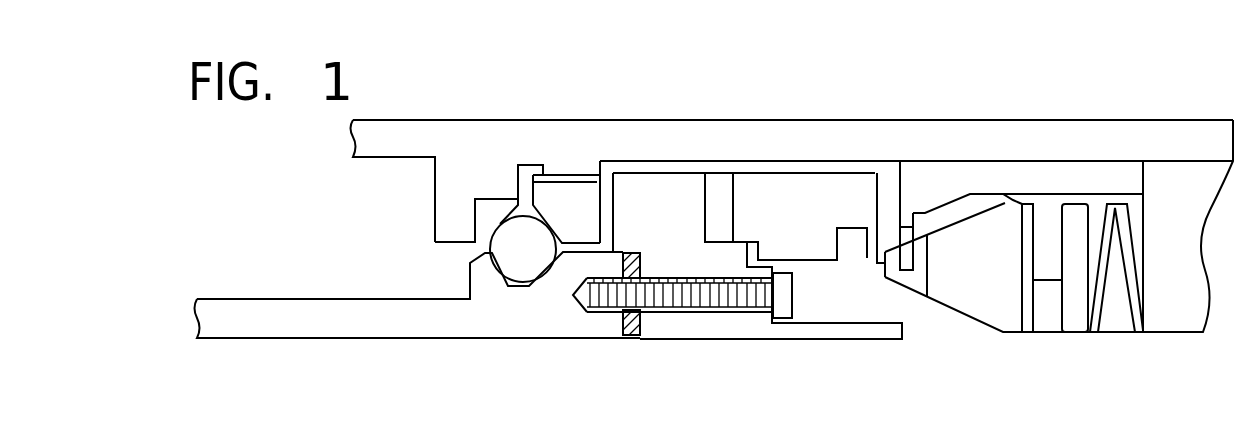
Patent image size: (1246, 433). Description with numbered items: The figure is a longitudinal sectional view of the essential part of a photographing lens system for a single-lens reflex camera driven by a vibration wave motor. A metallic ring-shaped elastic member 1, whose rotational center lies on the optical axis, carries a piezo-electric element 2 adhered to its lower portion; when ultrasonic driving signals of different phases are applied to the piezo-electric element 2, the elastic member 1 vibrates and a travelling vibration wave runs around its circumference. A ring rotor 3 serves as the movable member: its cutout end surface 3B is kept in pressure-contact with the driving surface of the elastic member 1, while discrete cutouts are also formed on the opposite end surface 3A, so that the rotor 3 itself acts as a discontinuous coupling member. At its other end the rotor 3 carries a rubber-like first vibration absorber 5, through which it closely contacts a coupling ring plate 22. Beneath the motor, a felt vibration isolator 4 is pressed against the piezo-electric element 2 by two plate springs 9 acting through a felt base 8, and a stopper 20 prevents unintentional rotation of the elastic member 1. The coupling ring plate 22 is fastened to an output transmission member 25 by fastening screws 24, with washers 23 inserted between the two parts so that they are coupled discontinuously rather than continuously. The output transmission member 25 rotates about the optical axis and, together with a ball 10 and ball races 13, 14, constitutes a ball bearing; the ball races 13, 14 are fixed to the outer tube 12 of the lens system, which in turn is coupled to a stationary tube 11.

The elastic member 1 is at (992, 218).
The piezo-electric element 2 is at (1033, 213).
The ring rotor 3 is at (832, 148).
The end surface of rotor 3A is at (750, 205).
The cutout end surface of rotor 3B is at (884, 278).
The vibration isolator 4 is at (1043, 333).
The first vibration absorber 5 is at (719, 182).
The felt base 8 is at (1073, 333).
The plate springs 9 is at (1112, 327).
The ball 10 is at (513, 263).
The stationary tube 11 is at (1180, 330).
The outer tube 12 is at (458, 131).
The ball race 13 is at (565, 200).
The ball race 14 is at (492, 221).
The stopper 20 is at (947, 178).
The coupling ring plate 22 is at (647, 187).
The washers 23 is at (632, 336).
The fastening screws 24 is at (745, 320).
The output transmission member 25 is at (558, 326).